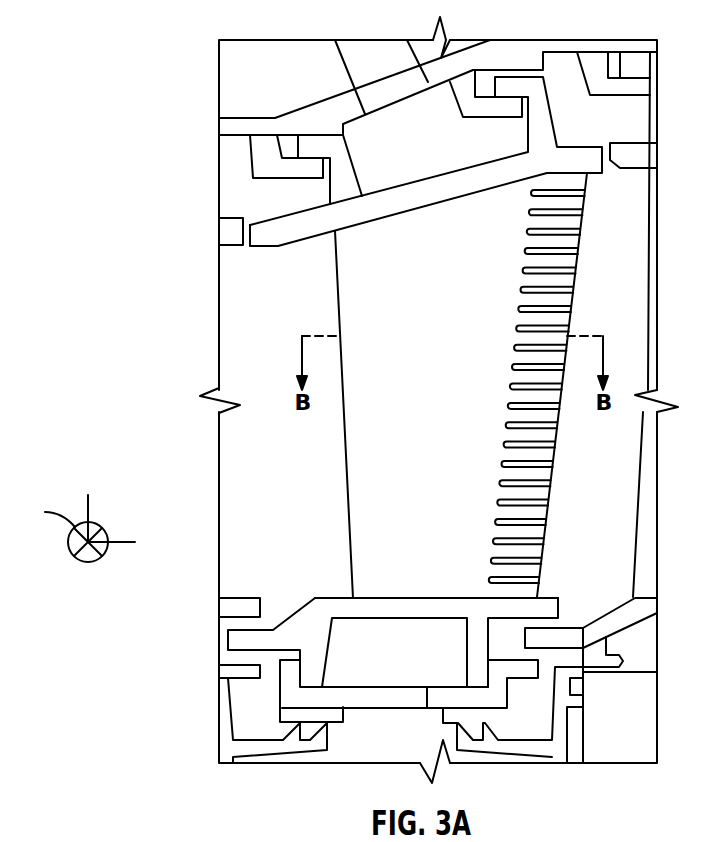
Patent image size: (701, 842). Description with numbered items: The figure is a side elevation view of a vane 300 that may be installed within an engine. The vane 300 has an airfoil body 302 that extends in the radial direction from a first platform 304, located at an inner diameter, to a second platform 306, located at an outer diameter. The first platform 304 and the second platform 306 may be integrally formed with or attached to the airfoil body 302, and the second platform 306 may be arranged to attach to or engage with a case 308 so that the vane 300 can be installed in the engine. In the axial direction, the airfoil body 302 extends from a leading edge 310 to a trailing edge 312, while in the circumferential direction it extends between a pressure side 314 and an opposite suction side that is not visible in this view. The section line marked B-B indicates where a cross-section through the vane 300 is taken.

The vane 300 is at (150, 441).
The airfoil body 302 is at (362, 533).
The first platform 304 is at (237, 642).
The second platform 306 is at (257, 225).
The case 308 is at (312, 112).
The leading edge 310 is at (338, 280).
The trailing edge 312 is at (547, 513).
The pressure side 314 is at (500, 277).